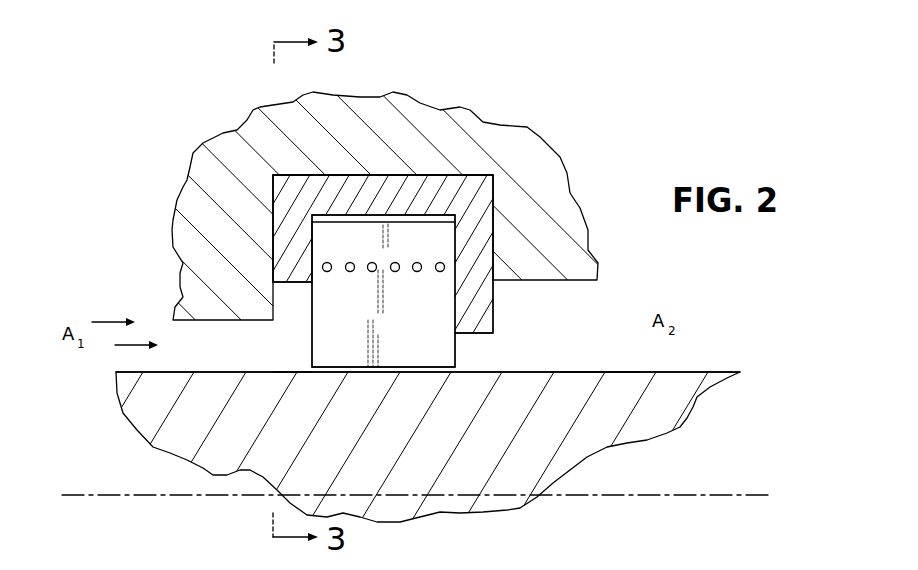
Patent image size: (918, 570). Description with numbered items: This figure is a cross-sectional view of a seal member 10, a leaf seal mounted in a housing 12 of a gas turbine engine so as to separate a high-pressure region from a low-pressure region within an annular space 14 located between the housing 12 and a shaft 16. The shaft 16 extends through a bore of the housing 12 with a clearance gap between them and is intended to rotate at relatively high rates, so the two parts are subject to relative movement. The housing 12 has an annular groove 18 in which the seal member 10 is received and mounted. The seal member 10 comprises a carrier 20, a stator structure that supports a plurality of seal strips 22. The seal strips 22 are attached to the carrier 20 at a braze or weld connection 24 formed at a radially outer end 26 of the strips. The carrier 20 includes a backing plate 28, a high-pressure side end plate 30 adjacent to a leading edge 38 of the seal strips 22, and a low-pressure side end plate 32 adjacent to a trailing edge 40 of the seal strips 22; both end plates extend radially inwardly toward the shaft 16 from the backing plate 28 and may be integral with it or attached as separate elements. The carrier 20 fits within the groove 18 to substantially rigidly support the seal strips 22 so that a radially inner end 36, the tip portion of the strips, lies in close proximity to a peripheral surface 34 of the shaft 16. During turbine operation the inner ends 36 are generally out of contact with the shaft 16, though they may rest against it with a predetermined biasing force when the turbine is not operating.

The seal member 10 is at (508, 303).
The housing 12 is at (570, 147).
The annular space 14 is at (218, 363).
The shaft 16 is at (700, 366).
The annular groove 18 is at (362, 178).
The carrier 20 is at (480, 163).
The seal strips 22 is at (302, 307).
The braze or weld connection 24 is at (338, 222).
The radially outer end 26 is at (333, 218).
The backing plate 28 is at (430, 188).
The high-pressure side end plate 30 is at (273, 212).
The low-pressure side end plate 32 is at (473, 238).
The peripheral surface 34 is at (588, 372).
The radially inner end 36 is at (380, 368).
The leading edge 38 is at (288, 358).
The trailing edge 40 is at (457, 342).